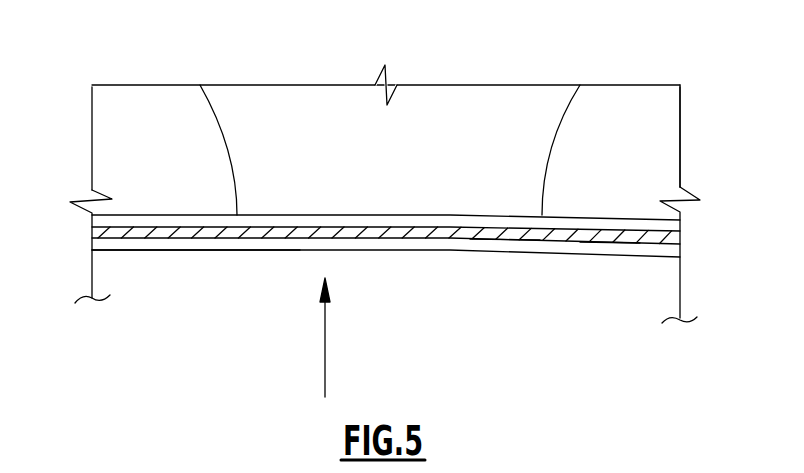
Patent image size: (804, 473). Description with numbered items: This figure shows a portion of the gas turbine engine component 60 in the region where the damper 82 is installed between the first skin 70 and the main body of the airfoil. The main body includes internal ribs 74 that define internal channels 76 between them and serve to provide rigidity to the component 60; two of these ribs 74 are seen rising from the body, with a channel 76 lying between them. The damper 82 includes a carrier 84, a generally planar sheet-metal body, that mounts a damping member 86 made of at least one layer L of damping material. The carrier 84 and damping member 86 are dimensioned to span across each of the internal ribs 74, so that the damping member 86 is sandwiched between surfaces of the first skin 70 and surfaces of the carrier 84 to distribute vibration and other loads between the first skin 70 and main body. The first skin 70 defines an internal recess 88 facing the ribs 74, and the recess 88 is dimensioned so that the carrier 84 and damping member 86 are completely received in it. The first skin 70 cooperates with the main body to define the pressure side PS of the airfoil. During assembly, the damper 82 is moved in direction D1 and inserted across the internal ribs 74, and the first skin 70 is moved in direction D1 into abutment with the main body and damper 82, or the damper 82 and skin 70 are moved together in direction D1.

The component 60 is at (249, 72).
The internal ribs 74 is at (442, 100).
The internal channels 76 is at (215, 105).
The carrier 84 is at (572, 225).
The damping member 86 is at (668, 239).
The internal recess 88 is at (509, 234).
The first skin 70 is at (647, 258).
The damper 82 is at (642, 218).
The pressure side PS is at (143, 252).
The layer of damping material L is at (608, 240).
The direction D1 is at (325, 368).